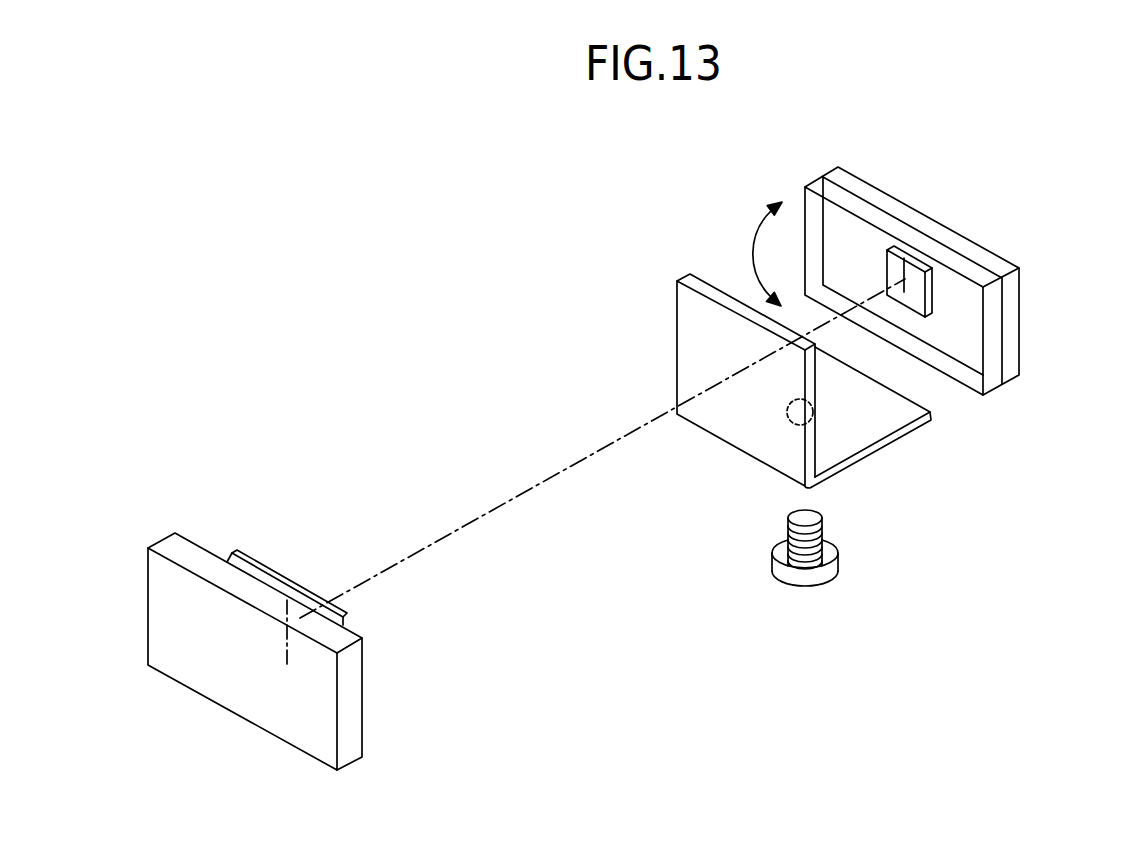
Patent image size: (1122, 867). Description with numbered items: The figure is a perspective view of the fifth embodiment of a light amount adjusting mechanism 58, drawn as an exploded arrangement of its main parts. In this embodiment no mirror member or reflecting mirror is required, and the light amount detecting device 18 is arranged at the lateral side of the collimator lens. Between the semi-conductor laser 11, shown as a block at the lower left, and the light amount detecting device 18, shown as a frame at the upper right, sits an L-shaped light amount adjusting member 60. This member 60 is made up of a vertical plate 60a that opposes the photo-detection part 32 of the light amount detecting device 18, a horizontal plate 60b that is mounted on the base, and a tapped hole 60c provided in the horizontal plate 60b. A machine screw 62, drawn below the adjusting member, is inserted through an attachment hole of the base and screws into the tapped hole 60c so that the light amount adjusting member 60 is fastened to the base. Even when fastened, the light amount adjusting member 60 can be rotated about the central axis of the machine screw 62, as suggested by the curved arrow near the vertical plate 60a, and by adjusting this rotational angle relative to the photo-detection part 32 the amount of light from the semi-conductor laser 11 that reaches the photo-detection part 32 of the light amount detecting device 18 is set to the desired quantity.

The light amount adjusting mechanism 58 is at (444, 273).
The semi-conductor laser 11 is at (315, 763).
The light amount detecting device 18 is at (1018, 331).
The photo-detection part 32 is at (921, 318).
The light amount adjusting member 60 is at (839, 396).
The vertical plate 60a is at (722, 437).
The horizontal plate 60b is at (838, 453).
The tapped hole 60c is at (823, 404).
The machine screw 62 is at (798, 589).